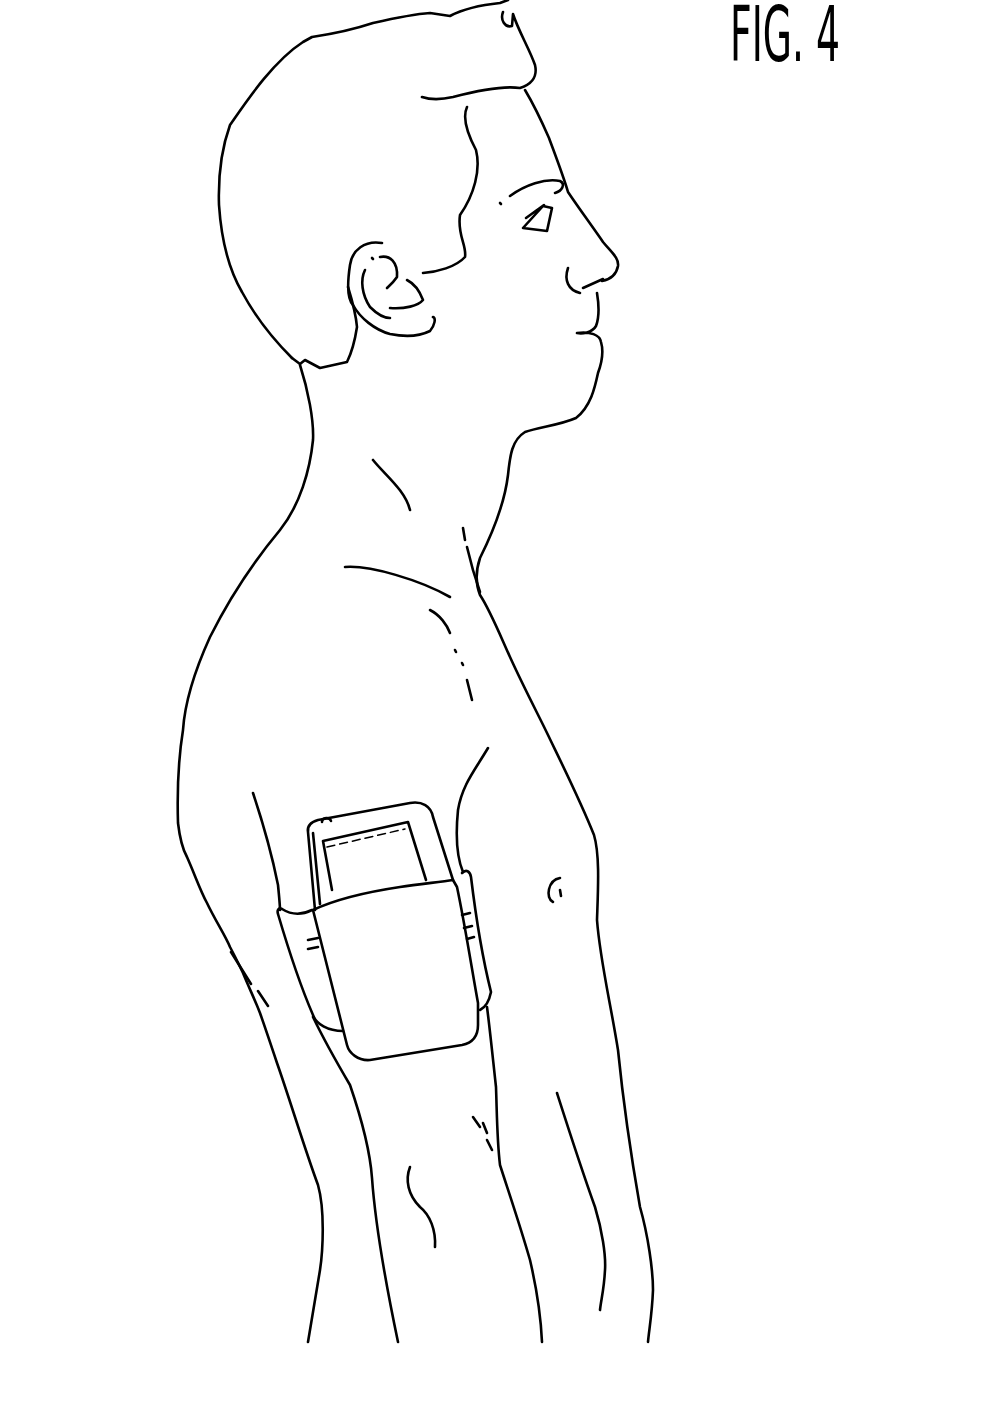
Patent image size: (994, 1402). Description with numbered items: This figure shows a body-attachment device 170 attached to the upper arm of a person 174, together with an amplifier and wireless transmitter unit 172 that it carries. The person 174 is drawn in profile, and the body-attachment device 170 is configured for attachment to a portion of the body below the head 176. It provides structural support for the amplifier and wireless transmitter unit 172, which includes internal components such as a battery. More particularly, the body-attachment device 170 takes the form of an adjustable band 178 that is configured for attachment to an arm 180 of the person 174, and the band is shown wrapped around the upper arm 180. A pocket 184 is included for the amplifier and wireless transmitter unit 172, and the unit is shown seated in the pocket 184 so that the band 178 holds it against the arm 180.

The body-attachment device 170 is at (369, 932).
The amplifier and wireless transmitter unit 172 is at (375, 838).
The person 174 is at (248, 622).
The head 176 is at (256, 227).
The adjustable band 178 is at (322, 1010).
The arm 180 is at (473, 1077).
The pocket 184 is at (437, 907).